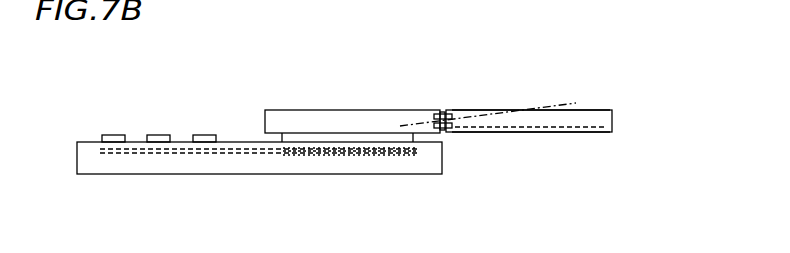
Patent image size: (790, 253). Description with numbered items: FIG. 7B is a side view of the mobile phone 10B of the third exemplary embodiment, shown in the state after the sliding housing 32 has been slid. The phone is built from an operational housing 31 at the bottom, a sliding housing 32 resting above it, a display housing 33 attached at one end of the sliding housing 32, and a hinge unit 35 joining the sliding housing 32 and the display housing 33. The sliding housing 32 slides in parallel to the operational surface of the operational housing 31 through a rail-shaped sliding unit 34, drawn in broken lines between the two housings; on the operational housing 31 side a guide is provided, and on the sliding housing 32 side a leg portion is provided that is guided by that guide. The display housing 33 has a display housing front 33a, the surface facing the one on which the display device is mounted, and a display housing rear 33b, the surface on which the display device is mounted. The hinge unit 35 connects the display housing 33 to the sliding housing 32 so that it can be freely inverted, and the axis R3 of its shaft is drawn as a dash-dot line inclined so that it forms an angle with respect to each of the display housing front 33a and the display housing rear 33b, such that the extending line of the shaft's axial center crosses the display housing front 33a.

The mobile phone 10B is at (260, 82).
The operational housing 31 is at (157, 163).
The sliding housing 32 is at (352, 122).
The display housing 33 is at (612, 121).
The display housing front 33a is at (592, 110).
The display housing rear 33b is at (560, 133).
The sliding unit 34 is at (322, 157).
The hinge unit 35 is at (442, 132).
The axis R3 is at (543, 107).